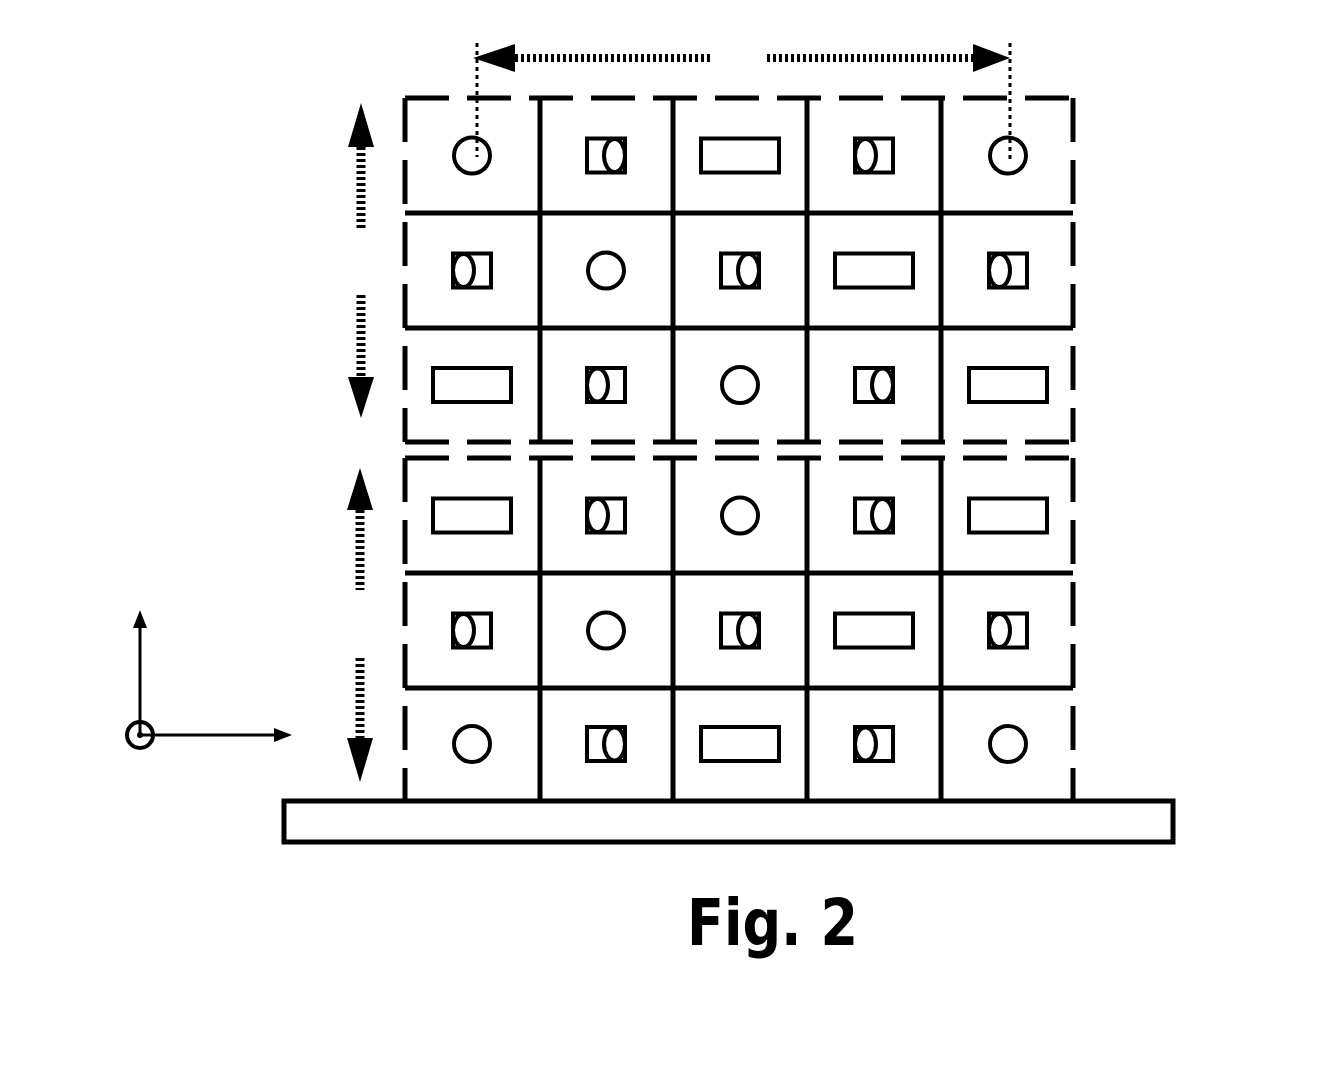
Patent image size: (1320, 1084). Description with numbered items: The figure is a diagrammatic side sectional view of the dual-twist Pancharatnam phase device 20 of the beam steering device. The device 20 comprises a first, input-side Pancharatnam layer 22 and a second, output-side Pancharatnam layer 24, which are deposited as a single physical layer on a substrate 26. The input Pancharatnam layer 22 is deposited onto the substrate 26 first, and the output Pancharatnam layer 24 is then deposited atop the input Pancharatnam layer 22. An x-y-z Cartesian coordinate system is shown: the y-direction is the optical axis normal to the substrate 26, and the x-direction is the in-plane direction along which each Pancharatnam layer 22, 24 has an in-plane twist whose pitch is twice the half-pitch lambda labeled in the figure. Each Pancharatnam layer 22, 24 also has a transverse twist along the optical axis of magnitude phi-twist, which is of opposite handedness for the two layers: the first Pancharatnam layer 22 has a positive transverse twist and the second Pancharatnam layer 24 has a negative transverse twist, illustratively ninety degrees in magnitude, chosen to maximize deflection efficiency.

The dual-twist Pancharatnam phase device 20 is at (212, 122).
The first Pancharatnam layer 22 is at (1097, 455).
The second Pancharatnam layer 24 is at (1097, 97).
The substrate 26 is at (1175, 818).